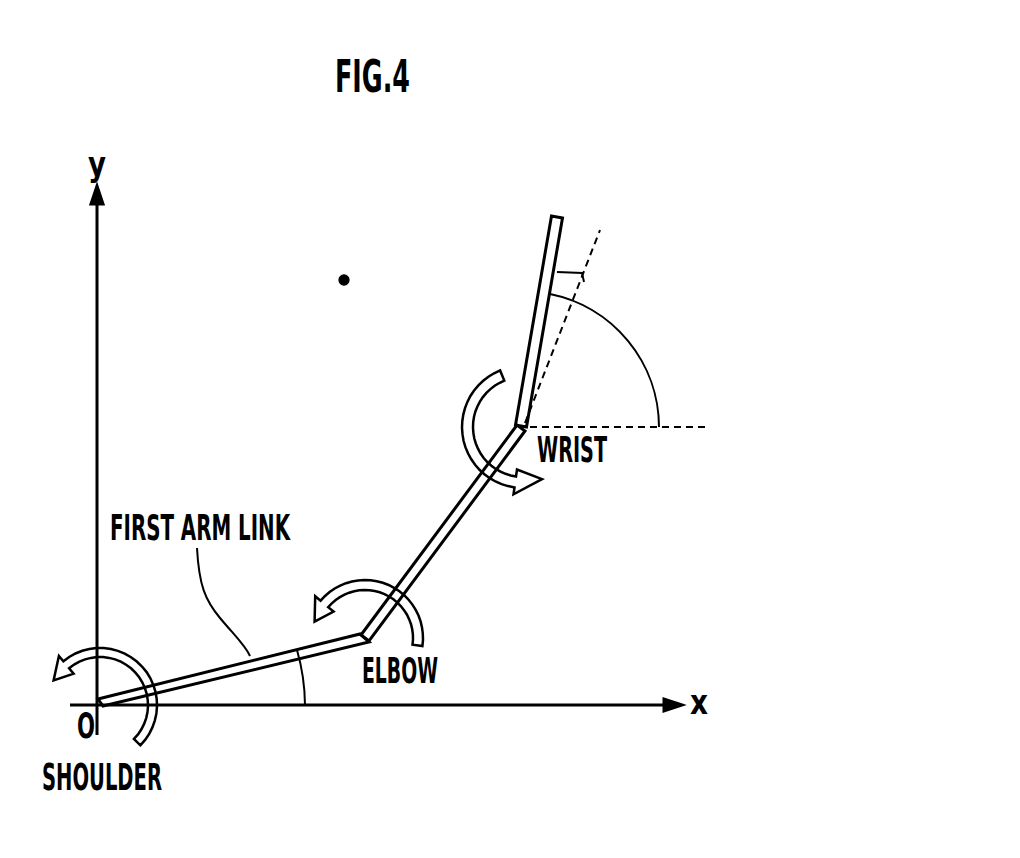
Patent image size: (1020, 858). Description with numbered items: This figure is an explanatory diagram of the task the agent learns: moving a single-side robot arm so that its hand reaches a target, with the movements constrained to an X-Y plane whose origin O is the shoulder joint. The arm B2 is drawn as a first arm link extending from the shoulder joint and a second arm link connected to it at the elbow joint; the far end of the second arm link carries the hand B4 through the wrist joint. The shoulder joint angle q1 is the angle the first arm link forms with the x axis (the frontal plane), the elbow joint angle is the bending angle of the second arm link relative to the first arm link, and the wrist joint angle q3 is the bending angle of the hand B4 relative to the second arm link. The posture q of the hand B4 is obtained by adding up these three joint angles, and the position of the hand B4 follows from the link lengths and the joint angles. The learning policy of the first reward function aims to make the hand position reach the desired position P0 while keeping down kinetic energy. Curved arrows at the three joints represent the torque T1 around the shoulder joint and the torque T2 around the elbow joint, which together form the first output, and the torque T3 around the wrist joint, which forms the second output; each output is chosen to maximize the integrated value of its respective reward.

The arm B2 is at (433, 540).
The hand B4 is at (536, 252).
The torque around the shoulder joint T1 is at (105, 679).
The torque around the elbow joint T2 is at (369, 593).
The torque around the wrist joint T3 is at (491, 432).
The desired position P0 is at (345, 260).
The shoulder joint angle q1 is at (316, 677).
The wrist joint angle q3 is at (577, 232).
The posture of the hand q is at (684, 360).